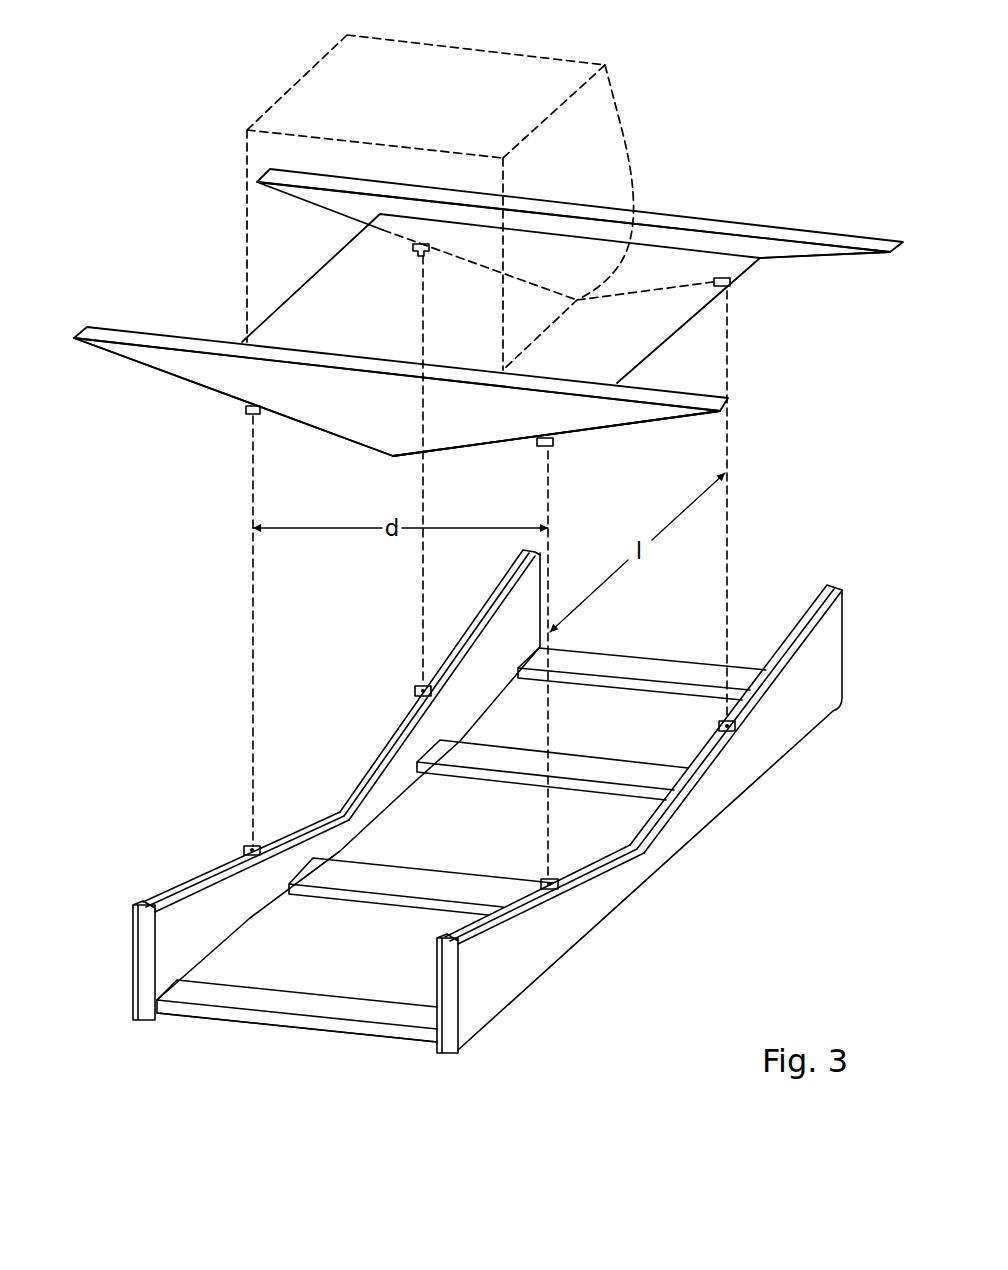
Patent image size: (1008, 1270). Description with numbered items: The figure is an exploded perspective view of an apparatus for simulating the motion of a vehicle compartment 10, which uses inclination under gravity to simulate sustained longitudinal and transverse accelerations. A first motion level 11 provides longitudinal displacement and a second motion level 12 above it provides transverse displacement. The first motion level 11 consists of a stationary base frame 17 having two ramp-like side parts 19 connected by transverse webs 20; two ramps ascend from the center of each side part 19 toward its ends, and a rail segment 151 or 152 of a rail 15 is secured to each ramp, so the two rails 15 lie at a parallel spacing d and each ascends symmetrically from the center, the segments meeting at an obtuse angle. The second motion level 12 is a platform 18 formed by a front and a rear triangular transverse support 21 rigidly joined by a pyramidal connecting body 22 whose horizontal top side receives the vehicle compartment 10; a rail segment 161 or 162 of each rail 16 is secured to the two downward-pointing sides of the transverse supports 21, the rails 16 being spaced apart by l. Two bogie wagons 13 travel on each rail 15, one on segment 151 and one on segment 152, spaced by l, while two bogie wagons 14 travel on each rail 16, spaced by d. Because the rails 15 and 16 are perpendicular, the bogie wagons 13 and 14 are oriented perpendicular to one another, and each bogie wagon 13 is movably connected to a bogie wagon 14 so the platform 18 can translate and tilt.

The vehicle compartment 10 is at (622, 127).
The first motion level 11 is at (477, 842).
The second motion level 12 is at (127, 380).
The bogie wagon 13 is at (560, 890).
The bogie wagon 14 is at (731, 290).
The rail 15 is at (486, 806).
The rail 16 is at (660, 427).
The base frame 17 is at (358, 1043).
The platform 18 is at (742, 215).
The side part 19 is at (478, 1002).
The transverse web 20 is at (323, 1013).
The transverse support 21 is at (798, 233).
The connecting body 22 is at (647, 328).
The rail segment 151 is at (520, 908).
The rail segment 152 is at (760, 697).
The rail segment 161 is at (333, 435).
The rail segment 162 is at (480, 447).